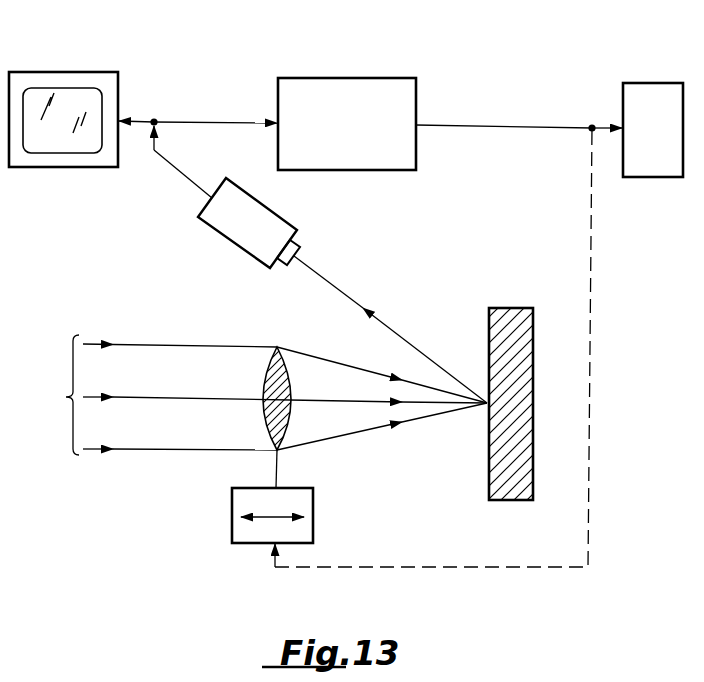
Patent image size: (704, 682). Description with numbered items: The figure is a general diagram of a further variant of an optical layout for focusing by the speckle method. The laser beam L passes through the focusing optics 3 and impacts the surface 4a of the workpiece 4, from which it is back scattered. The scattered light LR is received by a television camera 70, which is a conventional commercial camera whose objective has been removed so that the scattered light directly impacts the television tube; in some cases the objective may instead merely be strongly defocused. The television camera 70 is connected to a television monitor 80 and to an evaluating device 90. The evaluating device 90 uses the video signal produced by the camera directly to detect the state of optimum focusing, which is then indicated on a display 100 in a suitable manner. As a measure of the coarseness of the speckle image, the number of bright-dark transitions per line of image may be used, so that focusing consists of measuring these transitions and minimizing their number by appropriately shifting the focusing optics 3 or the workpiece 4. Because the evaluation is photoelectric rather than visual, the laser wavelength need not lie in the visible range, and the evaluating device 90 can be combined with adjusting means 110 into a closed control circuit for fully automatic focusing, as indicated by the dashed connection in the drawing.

The television monitor 80 is at (95, 82).
The evaluating device 90 is at (344, 88).
The display 100 is at (654, 93).
The television camera 70 is at (218, 218).
The scattered light LR is at (413, 345).
The laser beam L is at (166, 395).
The focusing optics 3 is at (265, 432).
The workpiece 4 is at (520, 349).
The surface of the workpiece 4a is at (487, 472).
The adjusting means 110 is at (303, 503).